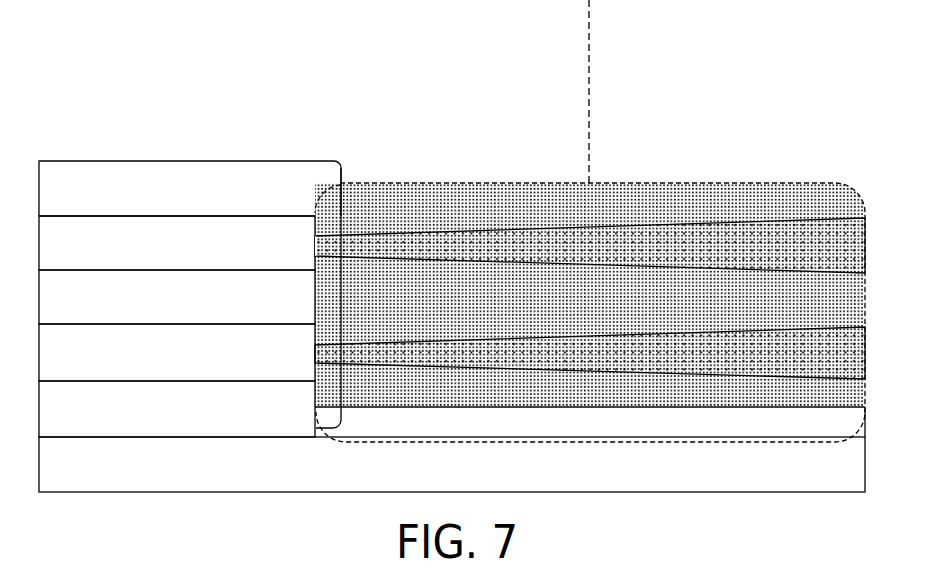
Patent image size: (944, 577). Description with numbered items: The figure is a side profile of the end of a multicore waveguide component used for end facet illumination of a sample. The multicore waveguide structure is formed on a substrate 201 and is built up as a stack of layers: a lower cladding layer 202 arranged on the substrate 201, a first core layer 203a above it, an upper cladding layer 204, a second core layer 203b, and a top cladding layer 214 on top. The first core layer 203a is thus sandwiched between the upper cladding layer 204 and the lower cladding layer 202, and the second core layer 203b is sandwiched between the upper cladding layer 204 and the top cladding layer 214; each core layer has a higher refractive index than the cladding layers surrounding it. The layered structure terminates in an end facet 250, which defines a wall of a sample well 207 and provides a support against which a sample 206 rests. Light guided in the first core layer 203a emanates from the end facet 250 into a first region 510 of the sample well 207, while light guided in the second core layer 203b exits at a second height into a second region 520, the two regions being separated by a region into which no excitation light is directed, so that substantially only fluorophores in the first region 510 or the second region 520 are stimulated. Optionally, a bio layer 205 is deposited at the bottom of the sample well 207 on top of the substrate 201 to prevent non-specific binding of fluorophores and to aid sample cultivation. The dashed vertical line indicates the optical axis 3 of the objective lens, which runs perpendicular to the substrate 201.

The substrate 201 is at (158, 477).
The lower cladding layer 202 is at (158, 422).
The first core layer 203a is at (152, 365).
The upper cladding layer 204 is at (158, 310).
The second core layer 203b is at (152, 255).
The top cladding layer 214 is at (158, 201).
The sample 206 is at (724, 198).
The second region 520 is at (813, 232).
The first region 510 is at (818, 363).
The sample well 207 is at (537, 183).
The end facet 250 is at (342, 294).
The bio layer 205 is at (721, 423).
The optical axis 3 is at (589, 65).